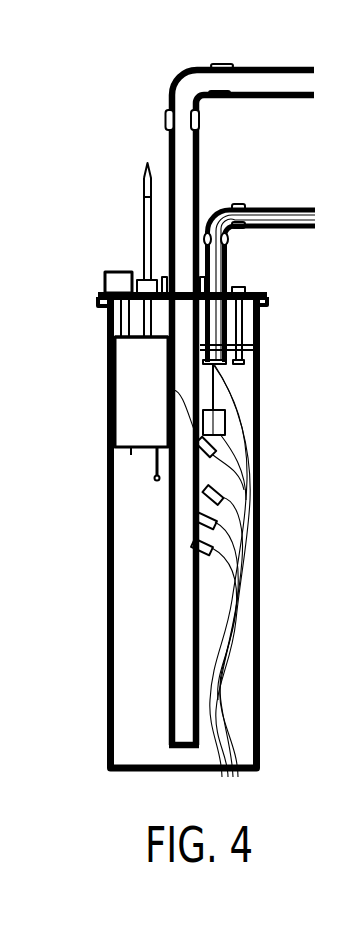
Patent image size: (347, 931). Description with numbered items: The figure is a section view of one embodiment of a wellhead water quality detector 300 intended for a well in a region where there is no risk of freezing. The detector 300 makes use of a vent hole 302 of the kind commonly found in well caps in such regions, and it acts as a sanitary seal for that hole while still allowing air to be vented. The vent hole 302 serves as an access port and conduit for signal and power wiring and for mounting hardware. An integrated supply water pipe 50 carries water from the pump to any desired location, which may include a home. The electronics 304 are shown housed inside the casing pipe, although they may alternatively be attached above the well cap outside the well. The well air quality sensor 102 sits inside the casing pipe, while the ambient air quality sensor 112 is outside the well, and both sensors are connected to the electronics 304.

The integrated supply water pipe 50 is at (185, 118).
The well air quality sensor 102 is at (122, 452).
The ambient air quality sensor 112 is at (99, 280).
The wellhead water quality detector 300 is at (100, 378).
The vent hole 302 is at (138, 282).
The electronics 304 is at (122, 410).